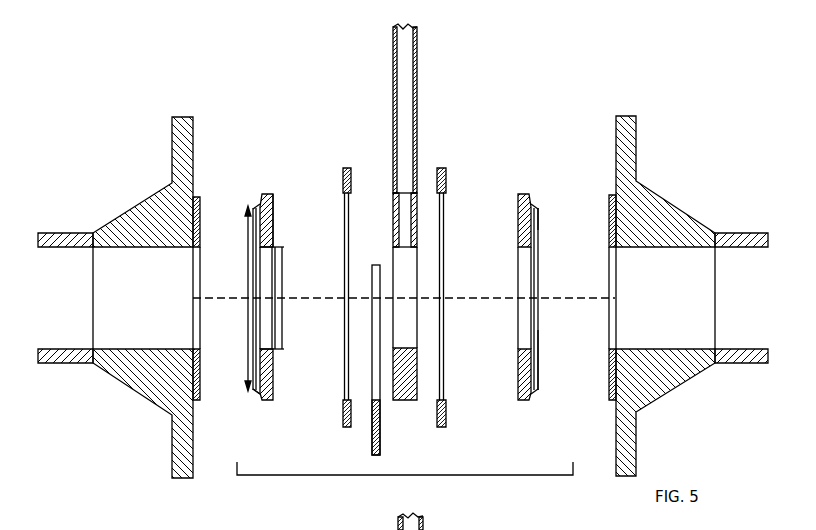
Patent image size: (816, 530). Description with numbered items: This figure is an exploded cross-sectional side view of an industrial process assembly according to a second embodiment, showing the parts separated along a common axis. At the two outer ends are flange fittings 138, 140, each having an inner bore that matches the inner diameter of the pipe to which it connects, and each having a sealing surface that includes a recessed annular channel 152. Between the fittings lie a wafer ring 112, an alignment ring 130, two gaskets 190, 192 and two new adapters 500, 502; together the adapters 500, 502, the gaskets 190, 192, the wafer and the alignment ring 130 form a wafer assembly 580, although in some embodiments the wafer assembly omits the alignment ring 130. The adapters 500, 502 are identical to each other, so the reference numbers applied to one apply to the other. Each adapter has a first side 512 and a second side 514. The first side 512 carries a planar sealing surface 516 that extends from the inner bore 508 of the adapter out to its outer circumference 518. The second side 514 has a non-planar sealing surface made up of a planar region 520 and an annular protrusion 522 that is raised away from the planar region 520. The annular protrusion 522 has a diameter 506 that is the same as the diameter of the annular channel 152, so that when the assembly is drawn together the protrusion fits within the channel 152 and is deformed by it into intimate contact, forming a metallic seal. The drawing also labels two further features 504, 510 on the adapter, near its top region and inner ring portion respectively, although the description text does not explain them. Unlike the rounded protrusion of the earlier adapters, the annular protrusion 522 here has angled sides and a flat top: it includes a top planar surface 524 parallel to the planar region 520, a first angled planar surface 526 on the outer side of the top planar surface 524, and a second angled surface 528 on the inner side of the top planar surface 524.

The wafer ring 112 is at (405, 401).
The alignment ring 130 is at (376, 263).
The fitting 138 is at (184, 479).
The fitting 140 is at (626, 477).
The annular channel 152 is at (200, 207).
The gasket 190 is at (347, 428).
The gasket 192 is at (442, 428).
The adapter 500 is at (273, 295).
The adapter 502 is at (523, 402).
The thin plate portion 504 is at (256, 205).
The diameter 506 is at (235, 298).
The inner bore 508 is at (534, 297).
The inner ring 510 is at (283, 298).
The first side 512 is at (282, 386).
The second side 514 is at (248, 392).
The planar sealing surface 516 is at (276, 206).
The outer circumference 518 is at (270, 193).
The planar region 520 is at (540, 352).
The annular protrusion 522 is at (540, 392).
The top planar surface 524 is at (540, 206).
The first angled planar surface 526 is at (537, 205).
The second angled surface 528 is at (540, 212).
The wafer assembly 580 is at (310, 477).